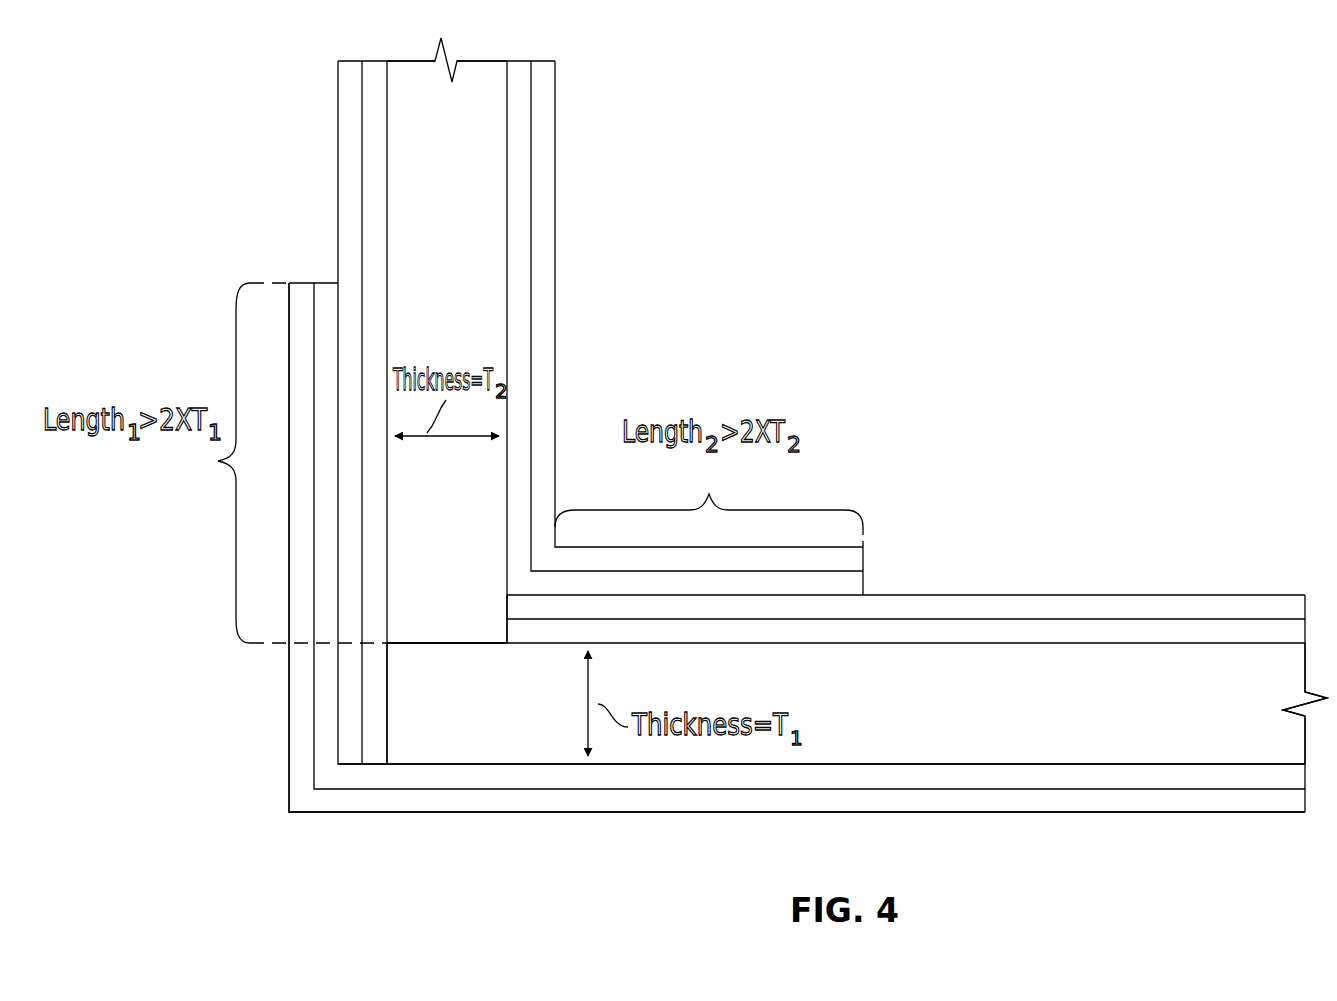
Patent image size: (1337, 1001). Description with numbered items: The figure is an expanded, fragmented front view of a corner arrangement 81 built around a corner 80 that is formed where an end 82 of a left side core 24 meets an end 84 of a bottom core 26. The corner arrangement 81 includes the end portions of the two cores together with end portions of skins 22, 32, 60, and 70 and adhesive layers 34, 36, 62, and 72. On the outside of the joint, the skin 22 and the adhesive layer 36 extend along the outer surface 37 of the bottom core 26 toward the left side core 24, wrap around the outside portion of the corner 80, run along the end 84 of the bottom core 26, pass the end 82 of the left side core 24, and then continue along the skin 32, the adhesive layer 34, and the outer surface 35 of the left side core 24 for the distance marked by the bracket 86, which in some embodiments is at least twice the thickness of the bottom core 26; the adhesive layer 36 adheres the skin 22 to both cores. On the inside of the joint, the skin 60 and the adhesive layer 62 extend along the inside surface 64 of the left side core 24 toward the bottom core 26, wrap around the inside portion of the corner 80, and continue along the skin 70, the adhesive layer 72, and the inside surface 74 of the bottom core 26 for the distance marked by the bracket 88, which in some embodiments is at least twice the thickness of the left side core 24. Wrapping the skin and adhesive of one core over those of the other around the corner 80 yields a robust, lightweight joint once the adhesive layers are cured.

The skin 22 is at (289, 745).
The adhesive layer 36 is at (314, 720).
The skin 32 is at (337, 195).
The adhesive layer 34 is at (362, 173).
The outer surface of left side core 35 is at (387, 148).
The left side core 24 is at (488, 187).
The inside surface of left side core 64 is at (508, 209).
The adhesive layer 62 is at (531, 230).
The skin 60 is at (555, 250).
The skin 70 is at (935, 595).
The adhesive layer 72 is at (976, 619).
The inside surface of bottom core 74 is at (1020, 643).
The bottom core 26 is at (1020, 742).
The outer surface of bottom core 37 is at (1073, 767).
The corner 80 is at (283, 818).
The corner arrangement 81 is at (1006, 245).
The end of left side core 82 is at (447, 643).
The end of bottom core 84 is at (387, 705).
The bracket 86 is at (286, 463).
The bracket 88 is at (709, 505).